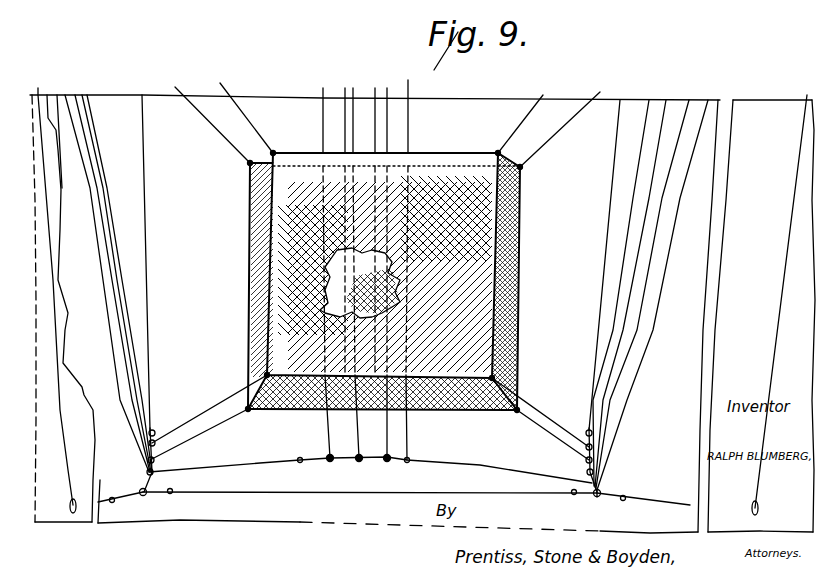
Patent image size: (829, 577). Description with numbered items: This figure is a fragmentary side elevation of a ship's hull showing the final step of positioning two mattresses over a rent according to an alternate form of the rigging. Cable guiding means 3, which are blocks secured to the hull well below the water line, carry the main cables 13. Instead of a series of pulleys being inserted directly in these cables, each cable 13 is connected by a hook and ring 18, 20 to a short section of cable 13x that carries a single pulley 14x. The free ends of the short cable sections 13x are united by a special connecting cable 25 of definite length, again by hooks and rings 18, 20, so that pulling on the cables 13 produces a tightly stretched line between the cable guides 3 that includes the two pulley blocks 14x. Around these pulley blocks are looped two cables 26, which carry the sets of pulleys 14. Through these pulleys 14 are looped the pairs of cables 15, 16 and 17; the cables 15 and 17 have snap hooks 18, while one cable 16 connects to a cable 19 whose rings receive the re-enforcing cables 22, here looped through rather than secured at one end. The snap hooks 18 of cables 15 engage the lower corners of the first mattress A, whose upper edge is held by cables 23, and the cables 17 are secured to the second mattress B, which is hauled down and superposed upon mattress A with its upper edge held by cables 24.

The cable guiding means 3 is at (92, 503).
The cables 13 is at (68, 446).
The short section of cable 13x is at (596, 498).
The pulleys 14 is at (157, 440).
The pulley 14x is at (612, 464).
The cables 15 is at (203, 433).
The cables 16 is at (262, 466).
The cables 17 is at (214, 413).
The snap hooks 18 is at (124, 506).
The cable 19 is at (378, 461).
The ring 20 is at (112, 497).
The re-enforcing cables 22 is at (385, 95).
The cables 23 is at (222, 141).
The cables 24 is at (268, 143).
The connecting cable 25 is at (332, 494).
The cables 26 is at (146, 226).
The mattress A is at (512, 264).
The mattress B is at (466, 318).